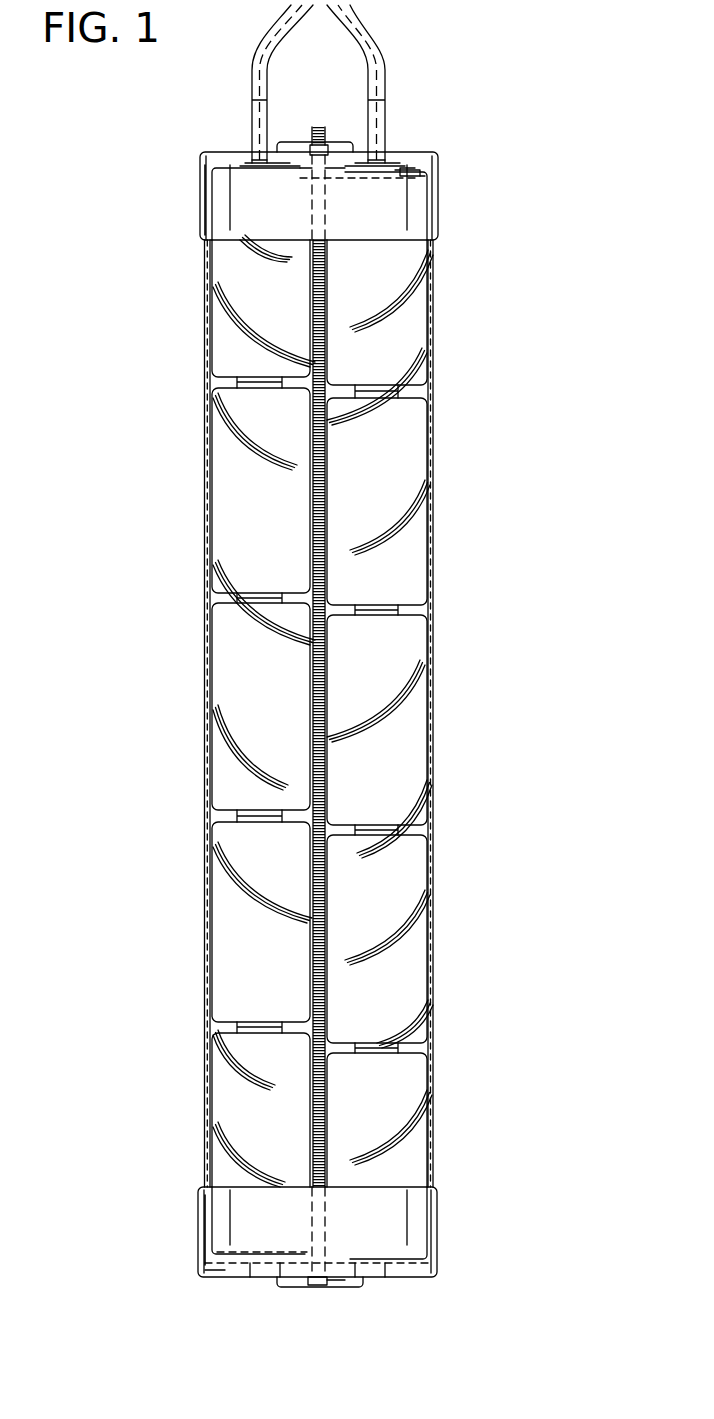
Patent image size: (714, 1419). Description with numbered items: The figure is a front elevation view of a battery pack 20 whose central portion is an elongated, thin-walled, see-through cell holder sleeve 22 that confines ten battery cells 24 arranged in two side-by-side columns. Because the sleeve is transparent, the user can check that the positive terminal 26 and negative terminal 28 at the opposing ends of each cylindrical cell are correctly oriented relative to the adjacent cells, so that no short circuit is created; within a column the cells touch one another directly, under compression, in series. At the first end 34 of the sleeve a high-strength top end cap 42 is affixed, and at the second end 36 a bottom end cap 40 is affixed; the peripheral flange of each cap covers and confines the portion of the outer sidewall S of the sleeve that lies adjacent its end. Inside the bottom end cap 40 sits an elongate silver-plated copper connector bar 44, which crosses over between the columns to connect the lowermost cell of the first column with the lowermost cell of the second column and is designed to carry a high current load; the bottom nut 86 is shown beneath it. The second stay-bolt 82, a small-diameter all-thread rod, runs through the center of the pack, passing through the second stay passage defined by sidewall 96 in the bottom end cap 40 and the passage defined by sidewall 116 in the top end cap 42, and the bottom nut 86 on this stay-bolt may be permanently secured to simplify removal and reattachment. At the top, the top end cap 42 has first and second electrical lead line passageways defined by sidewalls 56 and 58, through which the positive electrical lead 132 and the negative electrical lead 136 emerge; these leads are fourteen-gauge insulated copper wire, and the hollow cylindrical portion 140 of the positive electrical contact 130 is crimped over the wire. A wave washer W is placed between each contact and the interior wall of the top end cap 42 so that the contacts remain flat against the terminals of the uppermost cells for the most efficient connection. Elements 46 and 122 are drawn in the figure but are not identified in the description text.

The battery pack 20 is at (445, 298).
The cell holder sleeve 22 is at (205, 370).
The battery cells 24 is at (212, 272).
The positive terminal 26 is at (425, 180).
The negative terminal 28 is at (240, 165).
The first end 34 is at (425, 176).
The second end 36 is at (218, 1270).
The bottom end cap 40 is at (198, 1205).
The top end cap 42 is at (200, 185).
The connector bar 44 is at (285, 1283).
The top terminal plate 46 is at (298, 142).
The sidewall of first electrical lead line passageway 56 is at (390, 160).
The sidewall of second electrical lead line passageway 58 is at (250, 160).
The second stay-bolt 82 is at (325, 772).
The bottom nut 86 is at (335, 1283).
The sidewall of second stay passage 96 is at (312, 1285).
The sidewall of second stay passage 116 is at (325, 170).
The threaded post 122 is at (316, 128).
The positive electrical contact 130 is at (405, 160).
The positive electrical lead 132 is at (371, 43).
The negative electrical lead 136 is at (262, 42).
The hollow cylindrical portion 140 is at (368, 100).
The outer sidewall S is at (205, 212).
The wave washer W is at (245, 160).